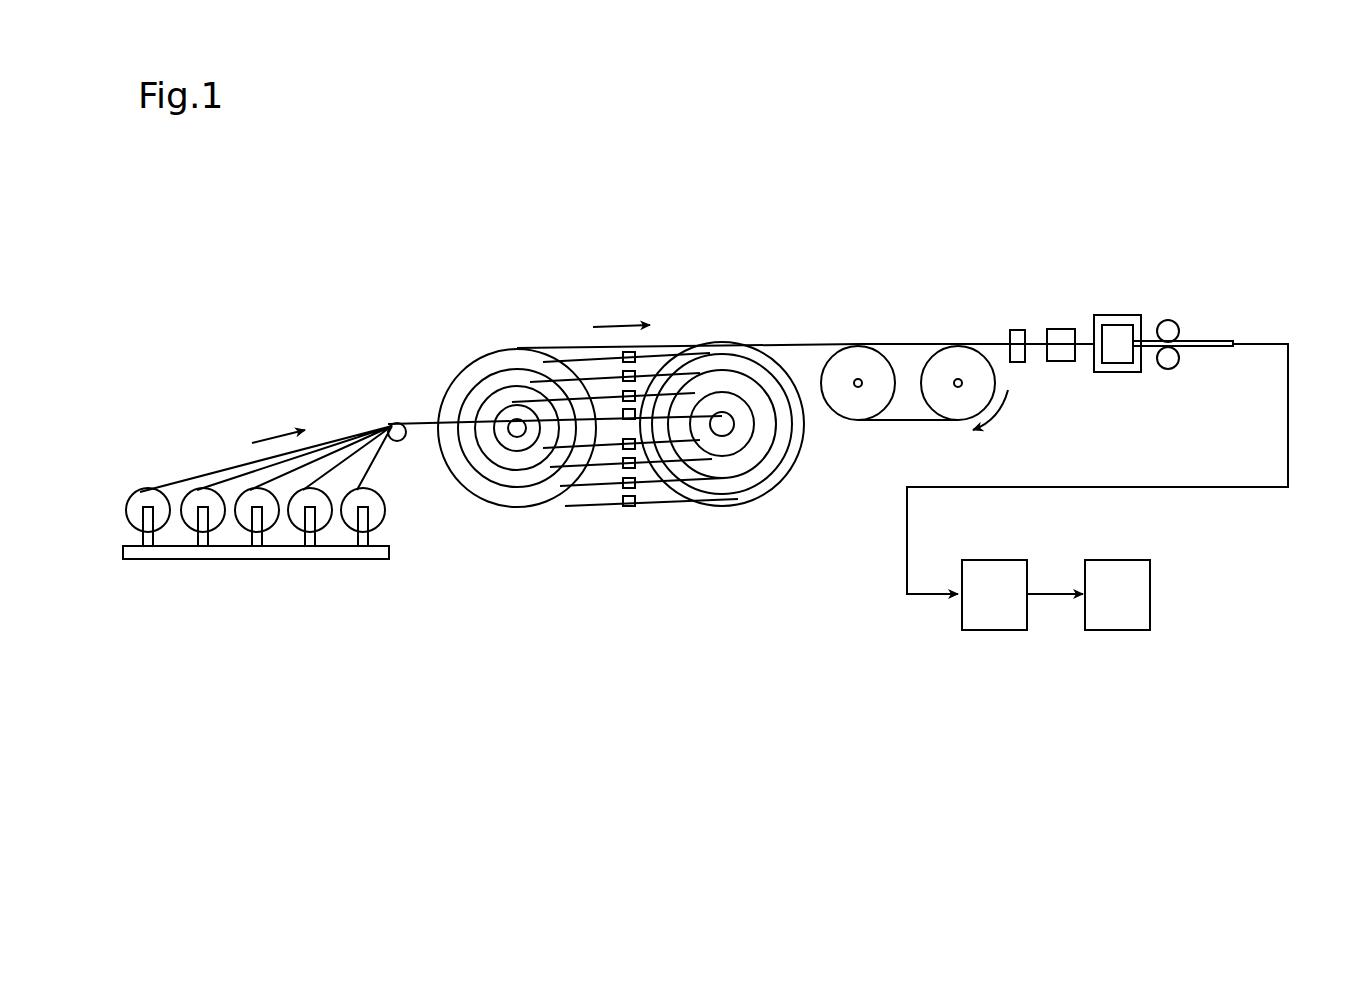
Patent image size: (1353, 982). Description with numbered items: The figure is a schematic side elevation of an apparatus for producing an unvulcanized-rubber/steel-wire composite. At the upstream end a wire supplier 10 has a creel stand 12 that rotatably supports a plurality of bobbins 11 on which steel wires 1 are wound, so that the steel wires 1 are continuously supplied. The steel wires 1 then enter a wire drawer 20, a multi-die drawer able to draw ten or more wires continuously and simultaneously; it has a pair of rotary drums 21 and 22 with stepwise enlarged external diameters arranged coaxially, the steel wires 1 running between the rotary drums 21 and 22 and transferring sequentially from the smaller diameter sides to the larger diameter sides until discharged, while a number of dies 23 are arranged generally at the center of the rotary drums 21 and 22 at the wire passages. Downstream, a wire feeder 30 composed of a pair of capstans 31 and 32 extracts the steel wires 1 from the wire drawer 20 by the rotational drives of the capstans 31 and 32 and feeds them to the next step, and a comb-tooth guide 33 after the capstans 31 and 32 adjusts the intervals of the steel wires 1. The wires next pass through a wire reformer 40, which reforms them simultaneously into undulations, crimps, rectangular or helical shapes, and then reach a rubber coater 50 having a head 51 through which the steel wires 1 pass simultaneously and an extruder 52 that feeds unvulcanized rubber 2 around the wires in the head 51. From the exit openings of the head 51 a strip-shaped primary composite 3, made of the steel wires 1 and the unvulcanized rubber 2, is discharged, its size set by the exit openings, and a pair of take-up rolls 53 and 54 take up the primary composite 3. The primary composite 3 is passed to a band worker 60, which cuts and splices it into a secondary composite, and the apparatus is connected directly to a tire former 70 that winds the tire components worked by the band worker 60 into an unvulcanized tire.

The steel wires 1 is at (226, 467).
The unvulcanized rubber 2 is at (1198, 338).
The primary composite 3 is at (1229, 337).
The wire supplier 10 is at (218, 554).
The bobbins 11 is at (142, 503).
The creel stand 12 is at (363, 557).
The wire drawer 20 is at (604, 449).
The rotary drum 21 is at (487, 363).
The rotary drum 22 is at (758, 368).
The dies 23 is at (631, 508).
The wire feeder 30 is at (914, 316).
The capstan 31 is at (865, 353).
The capstan 32 is at (958, 353).
The comb-tooth guide 33 is at (1022, 331).
The wire reformer 40 is at (1065, 323).
The rubber coater 50 is at (1160, 330).
The head 51 is at (1118, 358).
The extruder 52 is at (1110, 317).
The take-up roll 53 is at (1167, 328).
The take-up roll 54 is at (1168, 371).
The band worker 60 is at (1013, 610).
The tire former 70 is at (1136, 610).